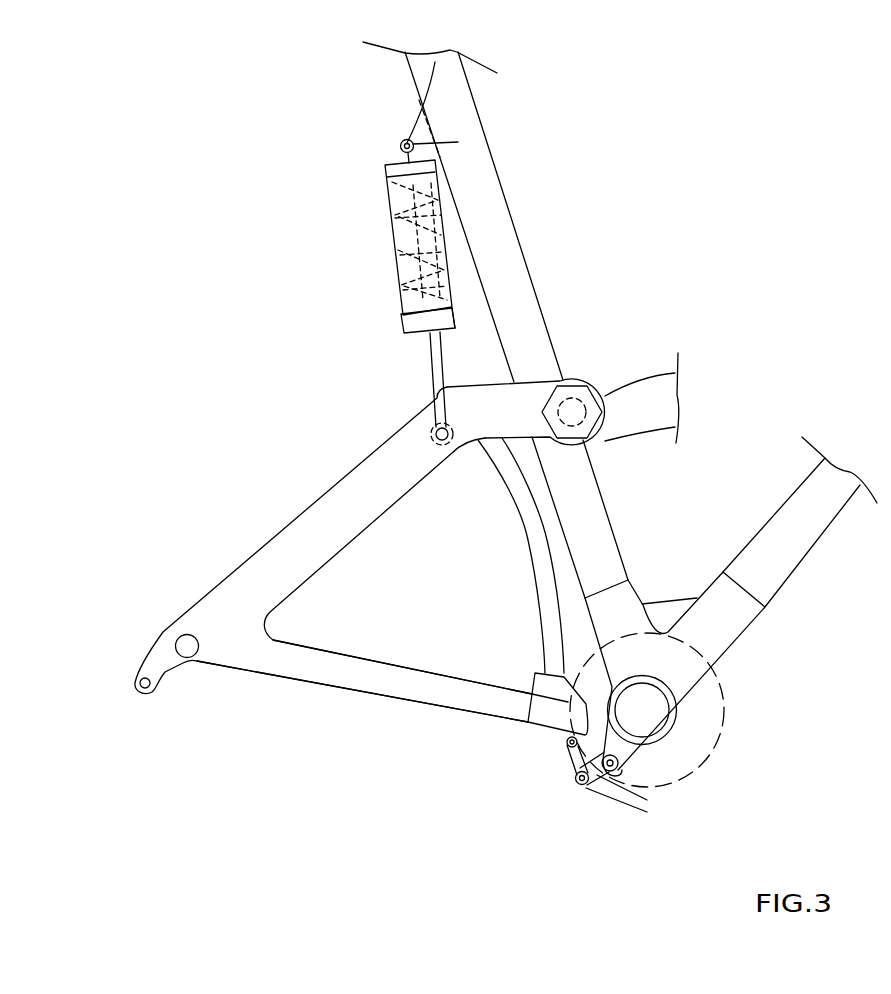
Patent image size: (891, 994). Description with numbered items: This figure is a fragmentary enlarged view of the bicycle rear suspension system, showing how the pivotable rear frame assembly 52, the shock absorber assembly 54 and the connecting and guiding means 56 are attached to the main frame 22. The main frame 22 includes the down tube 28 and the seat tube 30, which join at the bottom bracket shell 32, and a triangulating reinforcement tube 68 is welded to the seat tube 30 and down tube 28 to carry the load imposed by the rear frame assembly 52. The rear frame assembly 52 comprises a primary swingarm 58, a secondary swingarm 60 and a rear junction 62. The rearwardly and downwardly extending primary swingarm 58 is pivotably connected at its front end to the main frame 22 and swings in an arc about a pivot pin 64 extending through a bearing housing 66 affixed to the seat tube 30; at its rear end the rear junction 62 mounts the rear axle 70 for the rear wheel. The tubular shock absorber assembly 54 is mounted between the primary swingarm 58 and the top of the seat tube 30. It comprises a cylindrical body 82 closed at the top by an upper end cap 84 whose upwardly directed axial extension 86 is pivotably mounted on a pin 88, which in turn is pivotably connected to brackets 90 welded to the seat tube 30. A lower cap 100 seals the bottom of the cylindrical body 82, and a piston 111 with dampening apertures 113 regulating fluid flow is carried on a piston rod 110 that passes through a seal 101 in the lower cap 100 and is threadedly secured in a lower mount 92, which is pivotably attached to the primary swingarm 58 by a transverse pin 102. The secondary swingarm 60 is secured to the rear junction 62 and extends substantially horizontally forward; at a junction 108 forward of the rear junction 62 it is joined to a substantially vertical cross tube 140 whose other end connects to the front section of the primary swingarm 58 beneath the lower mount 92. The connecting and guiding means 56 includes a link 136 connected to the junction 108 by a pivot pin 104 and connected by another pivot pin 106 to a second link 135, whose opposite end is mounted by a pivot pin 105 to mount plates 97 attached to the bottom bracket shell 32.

The main frame 22 is at (474, 112).
The seat tube 30 is at (486, 180).
The down tube 28 is at (815, 497).
The bottom bracket shell 32 is at (720, 713).
The pivotable rear frame assembly 52 is at (317, 503).
The primary swingarm 58 is at (302, 548).
The secondary swingarm 60 is at (333, 675).
The rear junction 62 is at (215, 615).
The rear axle 70 is at (175, 645).
The pivot pin 64 is at (577, 416).
The bearing housing 66 is at (570, 380).
The triangulating reinforcement tube 68 is at (655, 388).
The cylindrical body 82 is at (390, 243).
The upper end cap 84 is at (387, 175).
The axial extension 86 is at (384, 166).
The pin 88 is at (401, 150).
The brackets 90 is at (418, 127).
The lower mount 92 is at (436, 435).
The lower cap 100 is at (403, 332).
The seal 101 is at (478, 322).
The transverse pin 102 is at (437, 441).
The piston rod 110 is at (430, 365).
The piston 111 is at (400, 270).
The dampening apertures 113 is at (443, 262).
The shock absorber assembly 54 is at (393, 303).
The cross tube 140 is at (527, 530).
The junction 108 is at (528, 722).
The pivot pin 104 is at (570, 742).
The link 136 is at (580, 783).
The pivot pin 106 is at (610, 807).
The pivot pin 105 is at (622, 767).
The connecting and guiding means 56 is at (587, 792).
The second link 135 is at (648, 812).
The mount plates 97 is at (620, 751).